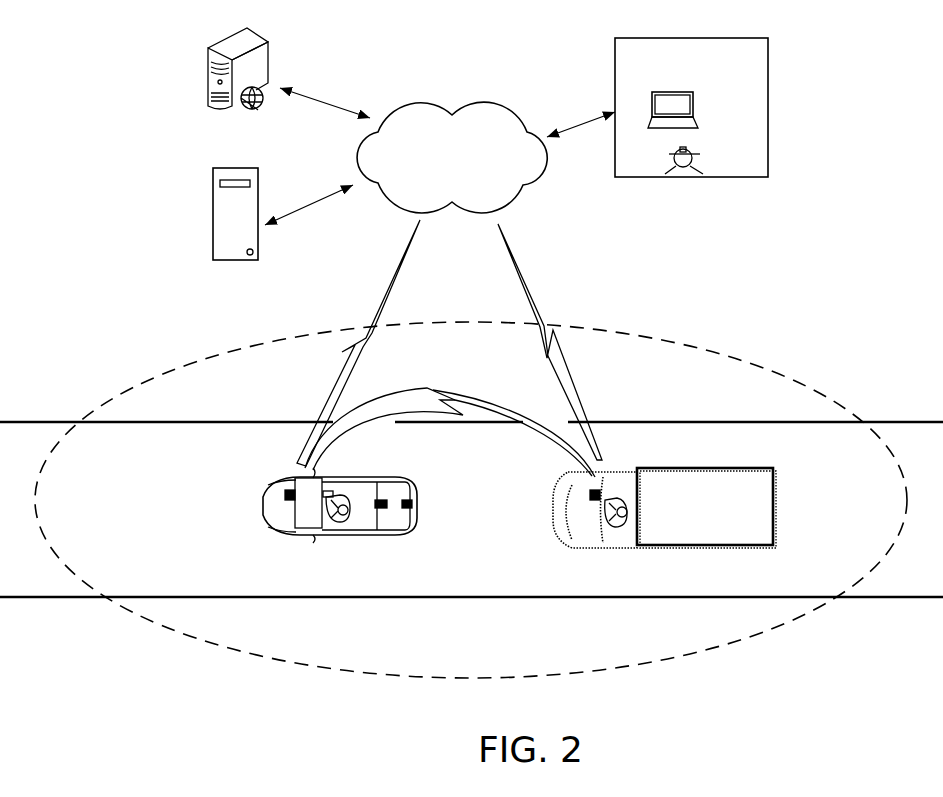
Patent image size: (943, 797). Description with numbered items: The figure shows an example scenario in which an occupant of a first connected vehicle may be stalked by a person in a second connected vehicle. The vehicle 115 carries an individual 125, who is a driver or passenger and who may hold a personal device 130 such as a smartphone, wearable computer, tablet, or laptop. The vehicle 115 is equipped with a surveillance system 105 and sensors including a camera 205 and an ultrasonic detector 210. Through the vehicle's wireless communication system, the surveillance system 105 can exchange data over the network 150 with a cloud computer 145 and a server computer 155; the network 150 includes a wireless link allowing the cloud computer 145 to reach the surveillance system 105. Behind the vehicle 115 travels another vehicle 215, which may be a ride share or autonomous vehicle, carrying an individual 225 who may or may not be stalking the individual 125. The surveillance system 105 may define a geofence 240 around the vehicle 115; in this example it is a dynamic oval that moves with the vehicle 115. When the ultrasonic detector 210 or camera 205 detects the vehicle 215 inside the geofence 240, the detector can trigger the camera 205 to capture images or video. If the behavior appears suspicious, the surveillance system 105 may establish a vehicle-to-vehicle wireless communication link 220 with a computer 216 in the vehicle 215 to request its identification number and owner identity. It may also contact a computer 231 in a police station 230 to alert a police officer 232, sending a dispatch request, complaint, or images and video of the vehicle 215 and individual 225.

The surveillance system 105 is at (280, 497).
The vehicle 115 is at (262, 532).
The individual 125 is at (345, 503).
The personal device 130 is at (327, 490).
The cloud computer 145 is at (193, 108).
The network 150 is at (491, 136).
The server computer 155 is at (205, 223).
The camera 205 is at (382, 512).
The ultrasonic detector 210 is at (413, 505).
The vehicle 215 is at (545, 533).
The computer 216 is at (588, 483).
The vehicle-to-vehicle wireless communication link 220 is at (465, 388).
The individual 225 is at (622, 518).
The police station 230 is at (758, 61).
The computer 231 is at (695, 98).
The police officer 232 is at (708, 156).
The geofence 240 is at (673, 342).